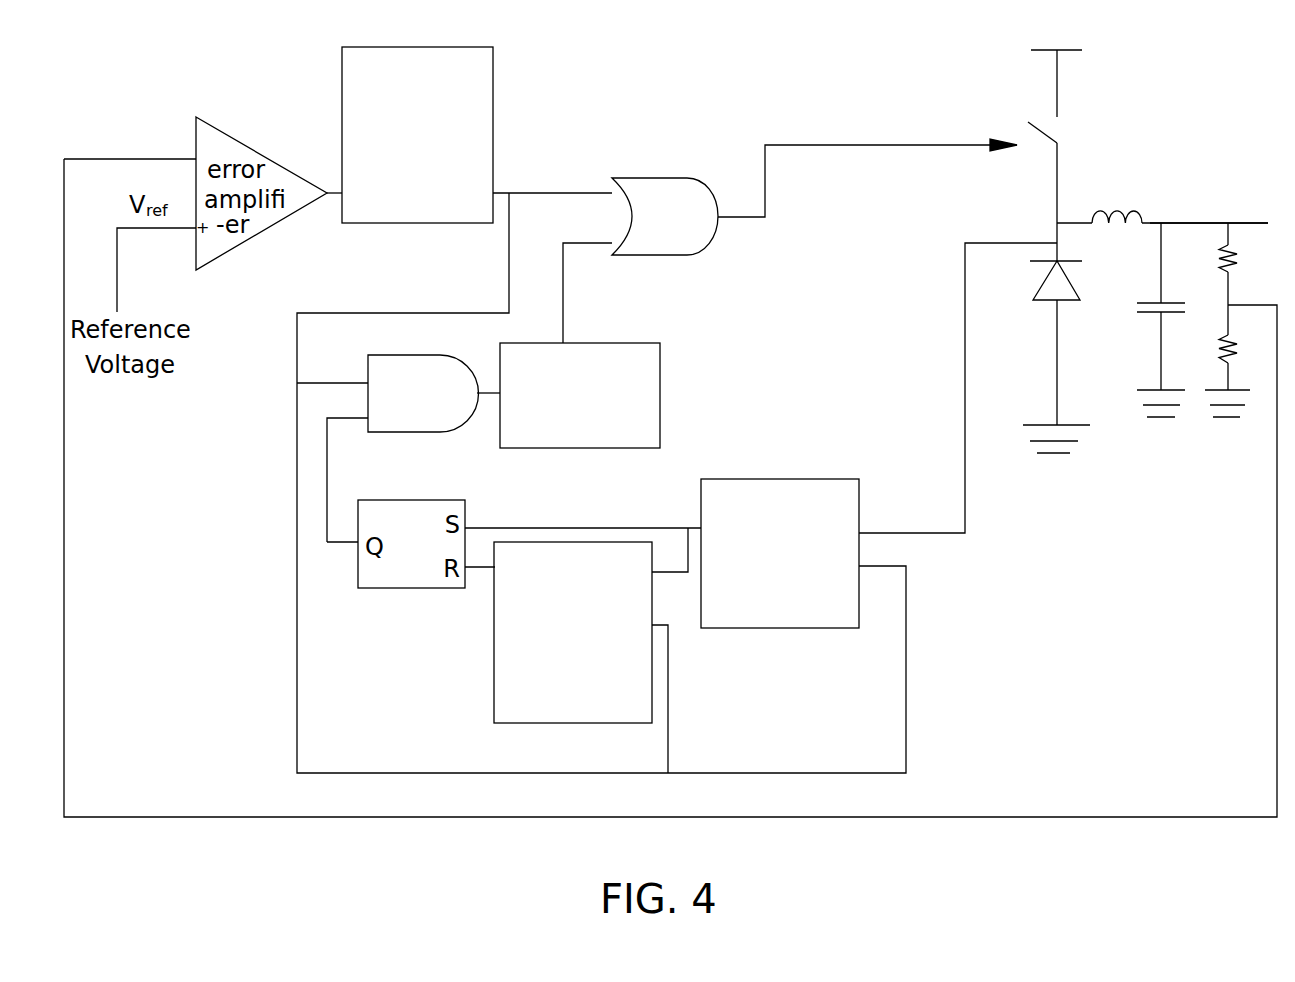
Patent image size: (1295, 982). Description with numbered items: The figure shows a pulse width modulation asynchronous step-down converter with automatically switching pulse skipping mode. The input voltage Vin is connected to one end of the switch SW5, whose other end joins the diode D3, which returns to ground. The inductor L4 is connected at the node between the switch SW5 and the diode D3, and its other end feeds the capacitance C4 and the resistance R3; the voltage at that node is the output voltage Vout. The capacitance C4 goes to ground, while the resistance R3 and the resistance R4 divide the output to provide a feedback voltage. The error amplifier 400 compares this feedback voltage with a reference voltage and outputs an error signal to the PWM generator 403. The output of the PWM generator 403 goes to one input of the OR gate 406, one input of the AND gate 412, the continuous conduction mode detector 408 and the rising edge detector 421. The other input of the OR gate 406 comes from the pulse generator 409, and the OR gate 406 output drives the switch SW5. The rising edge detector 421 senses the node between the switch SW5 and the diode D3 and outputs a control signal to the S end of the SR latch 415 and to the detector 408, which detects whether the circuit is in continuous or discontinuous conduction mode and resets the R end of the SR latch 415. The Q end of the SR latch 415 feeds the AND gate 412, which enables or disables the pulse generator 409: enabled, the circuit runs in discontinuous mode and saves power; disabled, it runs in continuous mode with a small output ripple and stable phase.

The error amplifier 400 is at (237, 140).
The PWM generator 403 is at (440, 218).
The OR gate 406 is at (644, 253).
The continuous conduction mode detector 408 is at (551, 715).
The pulse generator 409 is at (558, 443).
The AND gate 412 is at (396, 429).
The SR latch 415 is at (412, 588).
The rising edge detector 421 is at (758, 617).
The input voltage Vin is at (1056, 67).
The switch SW5 is at (1079, 124).
The inductor L4 is at (1117, 201).
The output voltage Vout is at (1209, 210).
The diode D3 is at (1072, 357).
The capacitance C4 is at (1178, 356).
The resistance R3 is at (1246, 260).
The resistance R4 is at (1239, 376).